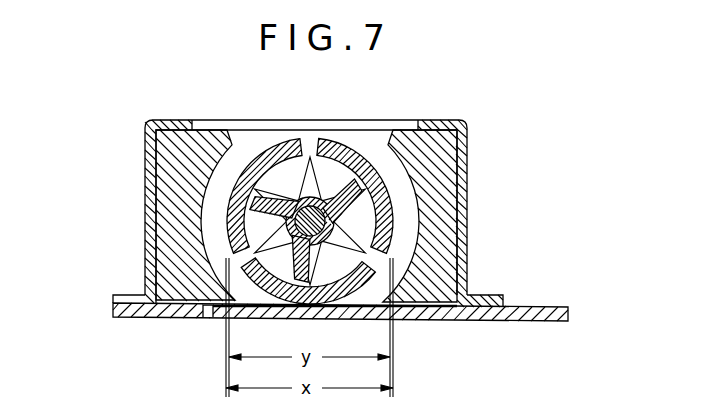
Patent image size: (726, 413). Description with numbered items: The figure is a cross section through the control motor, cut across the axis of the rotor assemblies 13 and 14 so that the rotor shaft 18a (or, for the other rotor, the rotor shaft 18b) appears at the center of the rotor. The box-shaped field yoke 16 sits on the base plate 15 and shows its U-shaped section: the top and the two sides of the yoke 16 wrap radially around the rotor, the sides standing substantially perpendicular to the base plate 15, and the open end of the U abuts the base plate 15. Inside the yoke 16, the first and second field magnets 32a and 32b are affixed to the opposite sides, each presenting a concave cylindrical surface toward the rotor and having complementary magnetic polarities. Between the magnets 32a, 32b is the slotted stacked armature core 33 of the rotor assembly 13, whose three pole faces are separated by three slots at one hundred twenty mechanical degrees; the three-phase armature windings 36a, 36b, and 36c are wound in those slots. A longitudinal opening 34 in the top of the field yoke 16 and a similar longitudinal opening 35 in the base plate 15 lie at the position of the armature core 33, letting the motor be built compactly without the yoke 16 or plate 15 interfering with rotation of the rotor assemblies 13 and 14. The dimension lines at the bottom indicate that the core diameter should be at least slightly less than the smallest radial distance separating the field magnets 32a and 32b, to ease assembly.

The rotor assembly 13 is at (343, 178).
The rotor assembly 14 is at (367, 145).
The base plate 15 is at (540, 306).
The field yoke 16 is at (147, 166).
The rotor shaft 18a is at (214, 222).
The rotor shaft 18b is at (232, 213).
The first field magnet 32a is at (178, 260).
The second field magnet 32b is at (447, 252).
The armature core 33 is at (345, 147).
The longitudinal opening 34 is at (413, 127).
The longitudinal opening 35 is at (206, 318).
The armature winding 36a is at (283, 170).
The armature winding 36b is at (350, 305).
The armature winding 36c is at (360, 227).